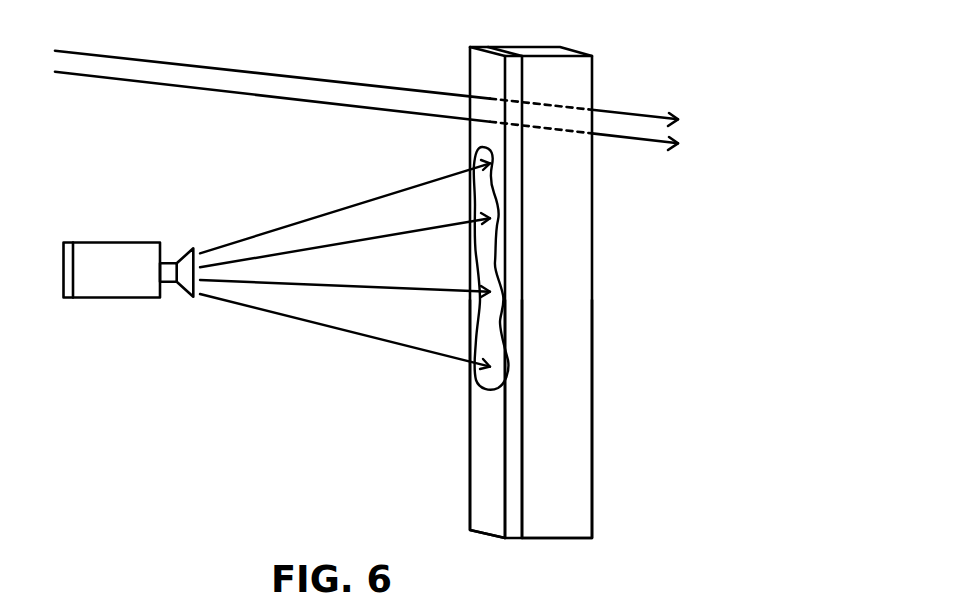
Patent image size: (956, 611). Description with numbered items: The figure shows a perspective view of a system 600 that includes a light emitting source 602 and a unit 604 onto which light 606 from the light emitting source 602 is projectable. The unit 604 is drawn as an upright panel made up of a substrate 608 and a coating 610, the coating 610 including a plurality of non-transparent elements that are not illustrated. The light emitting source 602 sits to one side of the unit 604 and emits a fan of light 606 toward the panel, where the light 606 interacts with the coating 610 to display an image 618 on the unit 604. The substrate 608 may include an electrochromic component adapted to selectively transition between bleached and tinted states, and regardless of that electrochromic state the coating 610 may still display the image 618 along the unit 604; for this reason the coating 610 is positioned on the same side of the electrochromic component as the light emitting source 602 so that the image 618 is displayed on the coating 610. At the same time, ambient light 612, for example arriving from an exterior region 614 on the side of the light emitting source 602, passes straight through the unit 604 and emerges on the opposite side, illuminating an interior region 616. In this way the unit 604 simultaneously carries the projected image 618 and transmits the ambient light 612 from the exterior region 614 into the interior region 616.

The system 600 is at (634, 63).
The light emitting source 602 is at (100, 298).
The unit 604 is at (592, 358).
The light 606 is at (278, 315).
The substrate 608 is at (578, 453).
The coating 610 is at (488, 455).
The ambient light 612 is at (87, 72).
The exterior region 614 is at (245, 441).
The interior region 616 is at (798, 441).
The image 618 is at (497, 190).